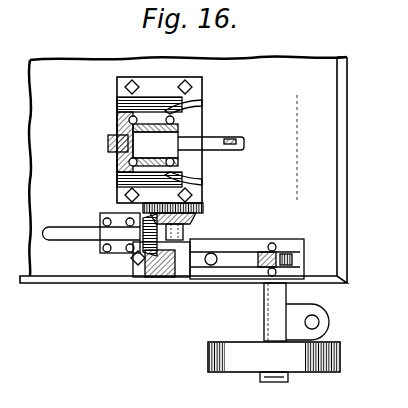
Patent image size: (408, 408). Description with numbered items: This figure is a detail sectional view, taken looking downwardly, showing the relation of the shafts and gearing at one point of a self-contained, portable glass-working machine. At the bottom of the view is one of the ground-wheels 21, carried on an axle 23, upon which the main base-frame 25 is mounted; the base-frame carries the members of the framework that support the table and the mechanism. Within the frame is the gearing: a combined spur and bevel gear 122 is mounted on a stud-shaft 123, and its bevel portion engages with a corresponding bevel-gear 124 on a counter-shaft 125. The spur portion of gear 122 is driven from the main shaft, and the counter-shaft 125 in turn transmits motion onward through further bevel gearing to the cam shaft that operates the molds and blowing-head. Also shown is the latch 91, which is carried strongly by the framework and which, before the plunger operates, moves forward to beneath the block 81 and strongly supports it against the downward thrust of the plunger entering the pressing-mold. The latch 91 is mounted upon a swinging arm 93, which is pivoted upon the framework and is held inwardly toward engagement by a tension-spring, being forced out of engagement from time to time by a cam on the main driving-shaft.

The ground-wheel 21 is at (208, 367).
The axle 23 is at (270, 316).
The main base-frame 25 is at (50, 284).
The block 81 is at (106, 140).
The latch 91 is at (244, 150).
The swinging arm 93 is at (230, 137).
The combined spur and bevel gear 122 is at (205, 208).
The stud-shaft 123 is at (174, 278).
The bevel-gear 124 is at (146, 250).
The counter-shaft 125 is at (69, 230).